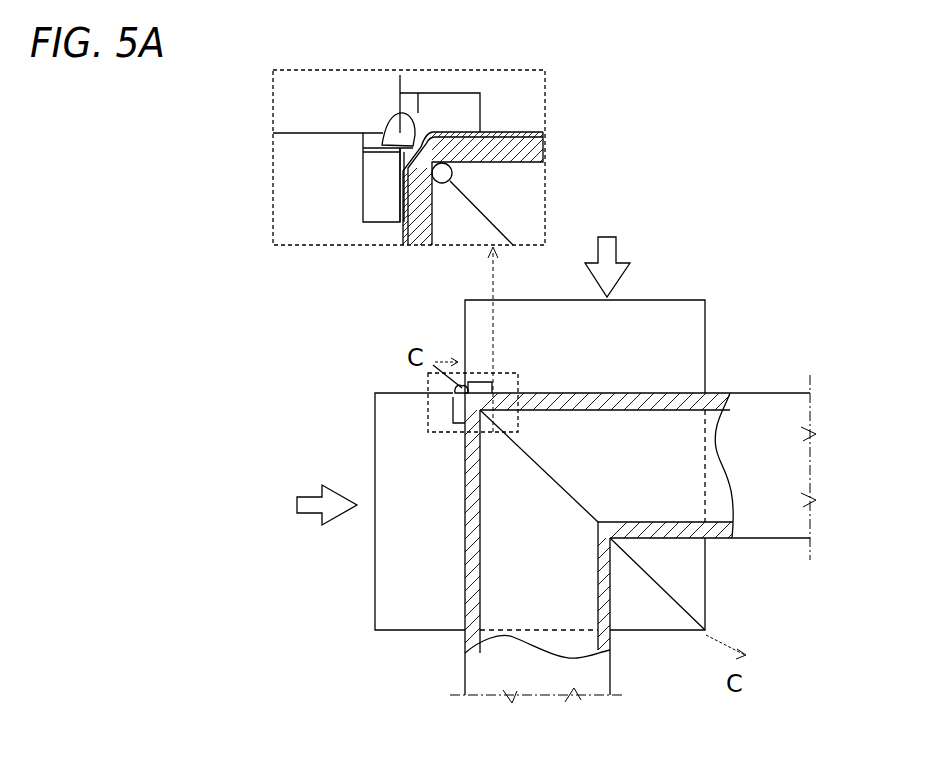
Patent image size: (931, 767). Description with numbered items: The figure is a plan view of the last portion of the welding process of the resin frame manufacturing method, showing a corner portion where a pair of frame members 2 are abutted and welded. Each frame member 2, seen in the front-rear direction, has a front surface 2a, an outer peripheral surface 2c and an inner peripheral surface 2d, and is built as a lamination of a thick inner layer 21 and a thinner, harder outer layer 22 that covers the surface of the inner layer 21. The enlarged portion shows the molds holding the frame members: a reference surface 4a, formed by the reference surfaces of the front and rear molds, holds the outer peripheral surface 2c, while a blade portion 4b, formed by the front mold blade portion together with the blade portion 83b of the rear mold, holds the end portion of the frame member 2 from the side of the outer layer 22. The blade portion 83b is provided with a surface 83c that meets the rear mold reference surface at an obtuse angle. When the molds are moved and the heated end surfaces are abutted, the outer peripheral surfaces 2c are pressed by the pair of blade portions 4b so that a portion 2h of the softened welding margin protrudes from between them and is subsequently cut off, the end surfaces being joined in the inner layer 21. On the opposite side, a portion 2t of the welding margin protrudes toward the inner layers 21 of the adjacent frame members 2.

The frame member 2 is at (812, 411).
The front surface 2a is at (785, 470).
The outer peripheral surface 2c is at (762, 393).
The inner peripheral surface 2d is at (760, 541).
The protruding portion of the welding margin 2h is at (393, 115).
The portion of the welding margin 2t is at (452, 177).
The inner layer 21 is at (543, 155).
The outer layer 22 is at (545, 133).
The reference surface 4a is at (510, 132).
The blade portion 4b is at (423, 135).
The blade portion 83b is at (334, 85).
The surface 83c is at (440, 135).